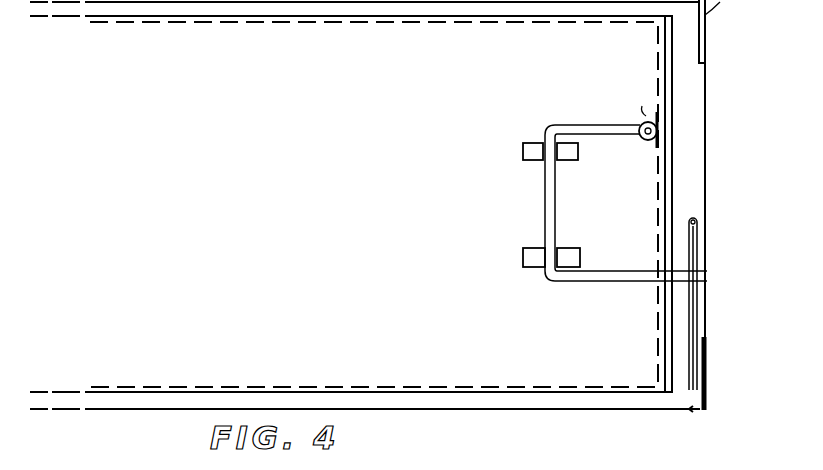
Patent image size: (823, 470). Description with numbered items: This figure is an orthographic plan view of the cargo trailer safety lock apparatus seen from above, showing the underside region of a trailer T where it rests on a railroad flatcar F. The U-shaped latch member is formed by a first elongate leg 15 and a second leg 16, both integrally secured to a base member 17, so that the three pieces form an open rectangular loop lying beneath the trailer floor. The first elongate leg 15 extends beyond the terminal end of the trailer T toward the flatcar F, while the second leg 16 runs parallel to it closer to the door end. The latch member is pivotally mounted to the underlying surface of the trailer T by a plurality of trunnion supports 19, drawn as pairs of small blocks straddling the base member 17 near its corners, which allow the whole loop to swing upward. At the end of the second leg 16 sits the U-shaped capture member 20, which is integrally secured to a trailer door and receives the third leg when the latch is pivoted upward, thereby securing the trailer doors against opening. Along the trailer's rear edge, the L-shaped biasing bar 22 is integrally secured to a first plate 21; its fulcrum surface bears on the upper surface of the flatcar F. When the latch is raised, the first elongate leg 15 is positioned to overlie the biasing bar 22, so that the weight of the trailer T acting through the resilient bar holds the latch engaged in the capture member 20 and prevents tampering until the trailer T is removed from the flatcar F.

The first elongate leg 15 is at (620, 282).
The second leg 16 is at (603, 123).
The base member 17 is at (546, 209).
The trunnion supports 19 is at (524, 157).
The U-shaped capture member 20 is at (647, 115).
The first plate 21 is at (705, 348).
The L-shaped biasing bar 22 is at (700, 306).
The trailer T is at (670, 191).
The railroad flatcar F is at (700, 410).